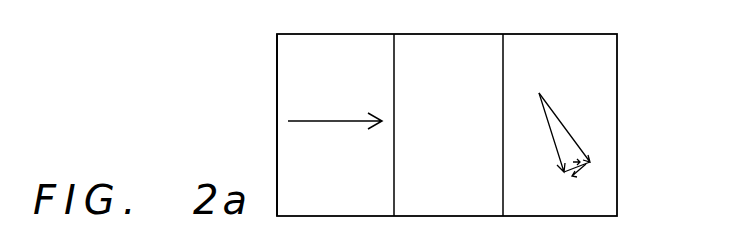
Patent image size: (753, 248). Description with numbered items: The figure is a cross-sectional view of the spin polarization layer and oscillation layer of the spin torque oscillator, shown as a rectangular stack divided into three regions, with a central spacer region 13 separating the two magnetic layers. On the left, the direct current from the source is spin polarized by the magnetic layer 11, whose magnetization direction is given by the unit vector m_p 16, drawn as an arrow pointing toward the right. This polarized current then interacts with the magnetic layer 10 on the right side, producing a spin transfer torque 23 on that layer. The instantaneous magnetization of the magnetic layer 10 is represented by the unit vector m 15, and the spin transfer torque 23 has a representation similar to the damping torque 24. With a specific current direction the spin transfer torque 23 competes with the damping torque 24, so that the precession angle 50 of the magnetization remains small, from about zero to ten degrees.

The magnetic layer 10 is at (612, 50).
The magnetic layer 11 is at (284, 52).
The middle section 13 is at (443, 34).
The unit vector m 15 is at (552, 112).
The unit vector m_p 16 is at (327, 124).
The spin transfer torque 23 is at (602, 162).
The damping torque 24 is at (578, 175).
The precession angle 50 is at (562, 142).